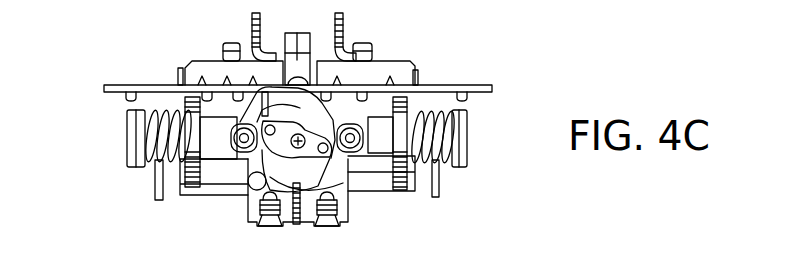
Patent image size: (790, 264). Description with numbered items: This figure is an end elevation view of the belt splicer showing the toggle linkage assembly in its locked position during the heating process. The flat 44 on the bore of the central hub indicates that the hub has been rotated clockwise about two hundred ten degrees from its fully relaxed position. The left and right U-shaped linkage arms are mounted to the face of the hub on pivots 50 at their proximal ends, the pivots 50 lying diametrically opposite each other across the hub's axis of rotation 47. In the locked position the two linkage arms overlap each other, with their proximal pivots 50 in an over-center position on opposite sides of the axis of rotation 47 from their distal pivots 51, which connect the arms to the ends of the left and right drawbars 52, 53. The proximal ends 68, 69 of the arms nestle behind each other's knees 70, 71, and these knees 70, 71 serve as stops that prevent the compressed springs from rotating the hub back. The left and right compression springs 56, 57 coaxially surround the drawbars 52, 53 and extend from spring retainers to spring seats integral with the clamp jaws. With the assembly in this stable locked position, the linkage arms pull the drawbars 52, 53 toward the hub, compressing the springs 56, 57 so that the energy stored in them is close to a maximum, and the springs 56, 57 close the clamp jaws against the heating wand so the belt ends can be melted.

The flat 44 is at (306, 128).
The axis of rotation 47 is at (298, 148).
The pivots 50 is at (267, 132).
The pivots 51 is at (354, 141).
The left drawbar 52 is at (148, 117).
The right drawbar 53 is at (438, 155).
The left compression spring 56 is at (147, 165).
The right compression spring 57 is at (444, 128).
The proximal end 68 is at (328, 152).
The proximal end 69 is at (264, 122).
The knee 70 is at (266, 113).
The knee 71 is at (335, 168).